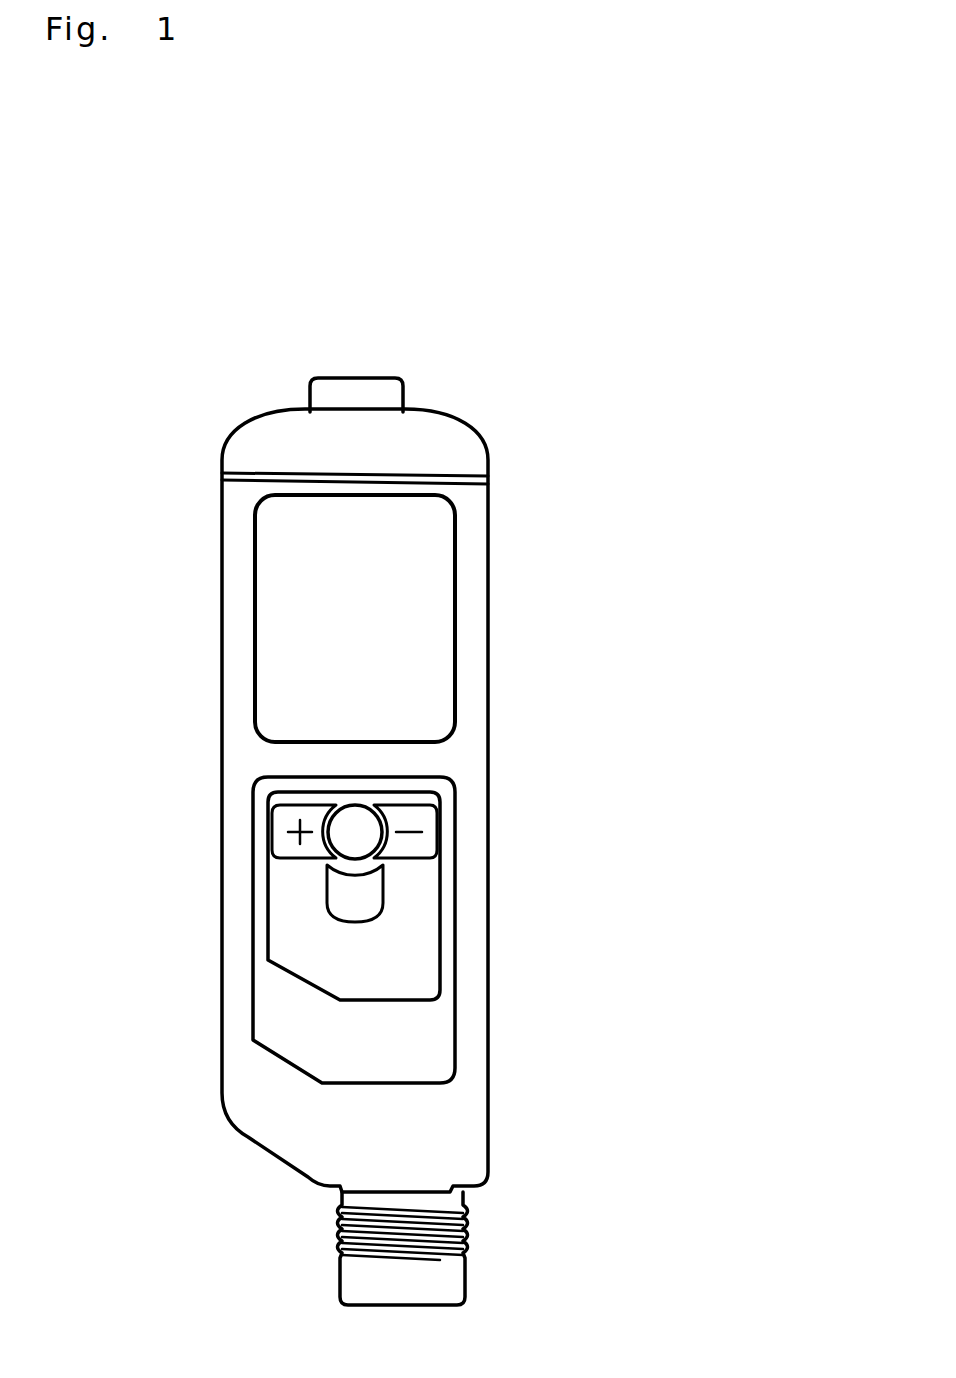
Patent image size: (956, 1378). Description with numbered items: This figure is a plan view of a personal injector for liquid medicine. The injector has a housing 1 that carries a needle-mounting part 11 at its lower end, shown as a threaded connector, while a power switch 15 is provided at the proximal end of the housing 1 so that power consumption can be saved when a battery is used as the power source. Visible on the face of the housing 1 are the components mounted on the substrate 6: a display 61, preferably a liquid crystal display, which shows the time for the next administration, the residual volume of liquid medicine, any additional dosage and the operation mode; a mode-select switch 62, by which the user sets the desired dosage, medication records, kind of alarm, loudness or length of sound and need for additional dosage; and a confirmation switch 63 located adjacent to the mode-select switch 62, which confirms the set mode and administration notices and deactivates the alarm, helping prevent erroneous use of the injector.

The housing 1 is at (341, 791).
The substrate 6 is at (283, 800).
The power switch 15 is at (400, 345).
The display 61 is at (436, 618).
The mode-select switch 62 is at (432, 930).
The confirmation switch 63 is at (469, 891).
The needle-mounting part 11 is at (471, 1248).